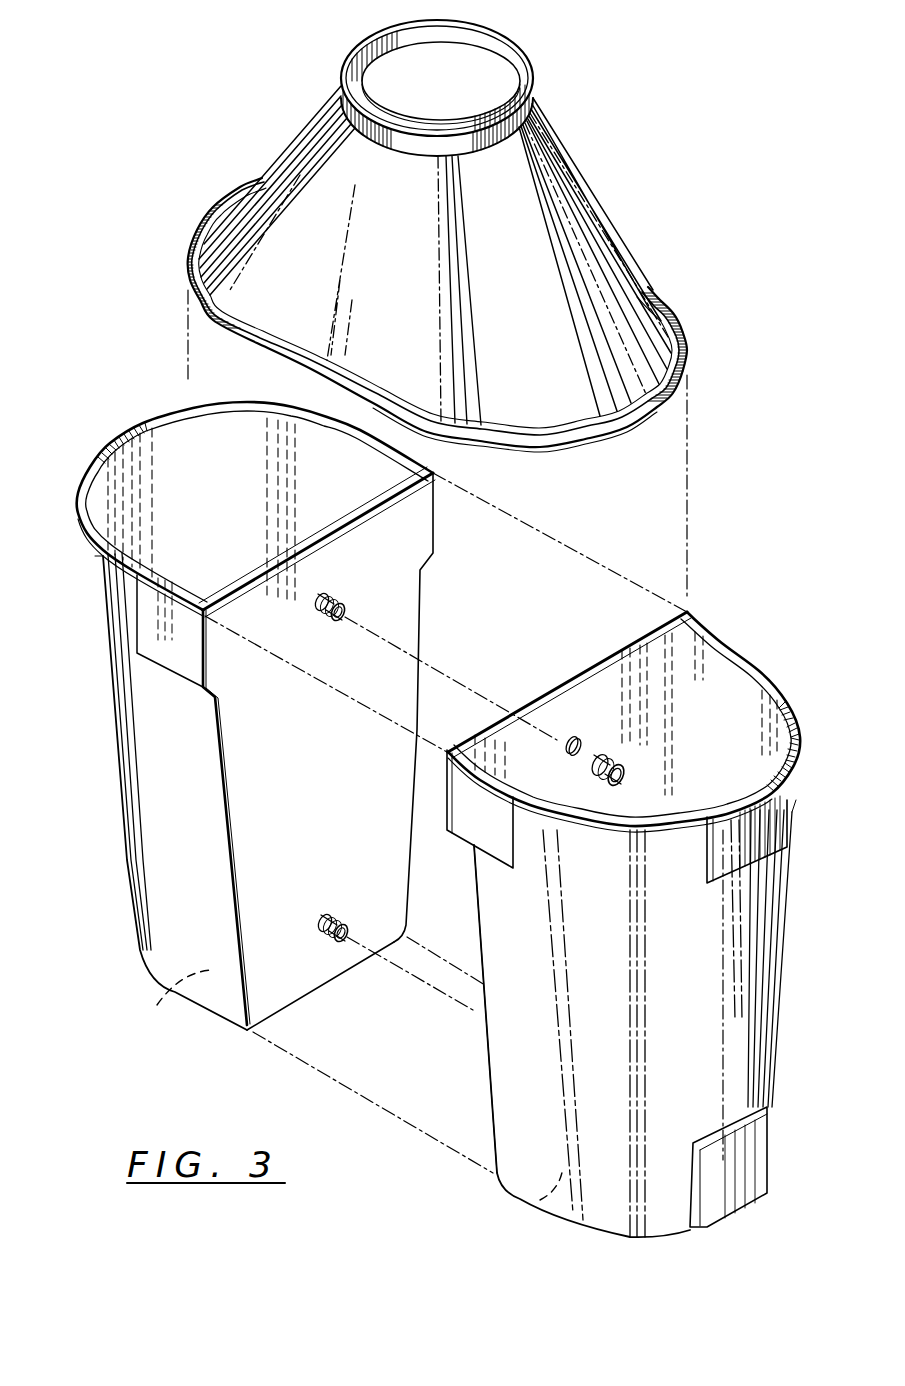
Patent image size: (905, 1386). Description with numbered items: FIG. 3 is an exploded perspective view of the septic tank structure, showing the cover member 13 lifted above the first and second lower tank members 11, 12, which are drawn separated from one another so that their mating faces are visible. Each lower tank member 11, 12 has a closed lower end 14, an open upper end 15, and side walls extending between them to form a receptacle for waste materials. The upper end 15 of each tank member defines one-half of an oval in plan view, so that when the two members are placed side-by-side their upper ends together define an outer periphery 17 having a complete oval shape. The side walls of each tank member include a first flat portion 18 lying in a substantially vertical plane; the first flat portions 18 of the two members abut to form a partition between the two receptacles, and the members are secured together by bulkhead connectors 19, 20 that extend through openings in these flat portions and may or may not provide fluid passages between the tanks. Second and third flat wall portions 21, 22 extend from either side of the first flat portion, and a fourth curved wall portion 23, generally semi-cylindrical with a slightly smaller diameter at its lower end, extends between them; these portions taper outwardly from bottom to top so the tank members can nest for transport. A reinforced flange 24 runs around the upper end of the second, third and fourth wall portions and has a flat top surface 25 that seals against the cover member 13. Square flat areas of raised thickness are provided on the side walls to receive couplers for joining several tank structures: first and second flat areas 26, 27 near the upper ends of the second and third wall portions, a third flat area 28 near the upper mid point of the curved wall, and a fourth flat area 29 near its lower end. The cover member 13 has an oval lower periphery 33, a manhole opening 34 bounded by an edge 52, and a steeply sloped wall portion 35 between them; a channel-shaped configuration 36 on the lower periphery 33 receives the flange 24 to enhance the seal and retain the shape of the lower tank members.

The first lower tank member 11 is at (147, 775).
The second lower tank member 12 is at (747, 968).
The cover member 13 is at (547, 152).
The closed lower end 14 is at (540, 1200).
The open upper end 15 is at (207, 443).
The outer periphery 17 is at (145, 558).
The first flat wall portion 18 is at (313, 966).
The bulkhead connector 19 is at (340, 603).
The bulkhead connector 20 is at (317, 920).
The second flat wall portion 21 is at (170, 882).
The third flat wall portion 22 is at (375, 472).
The fourth curved wall portion 23 is at (127, 680).
The reinforced flange 24 is at (85, 503).
The flat top surface 25 is at (127, 440).
The first flat area 26 is at (150, 613).
The second flat area 27 is at (473, 820).
The third flat area 28 is at (733, 843).
The fourth flat area 29 is at (747, 1162).
The lower periphery 33 is at (668, 313).
The manhole opening 34 is at (490, 73).
The steeply sloped wall portion 35 is at (570, 203).
The channel-shaped configuration 36 is at (683, 350).
The edge of the manhole opening 52 is at (347, 107).